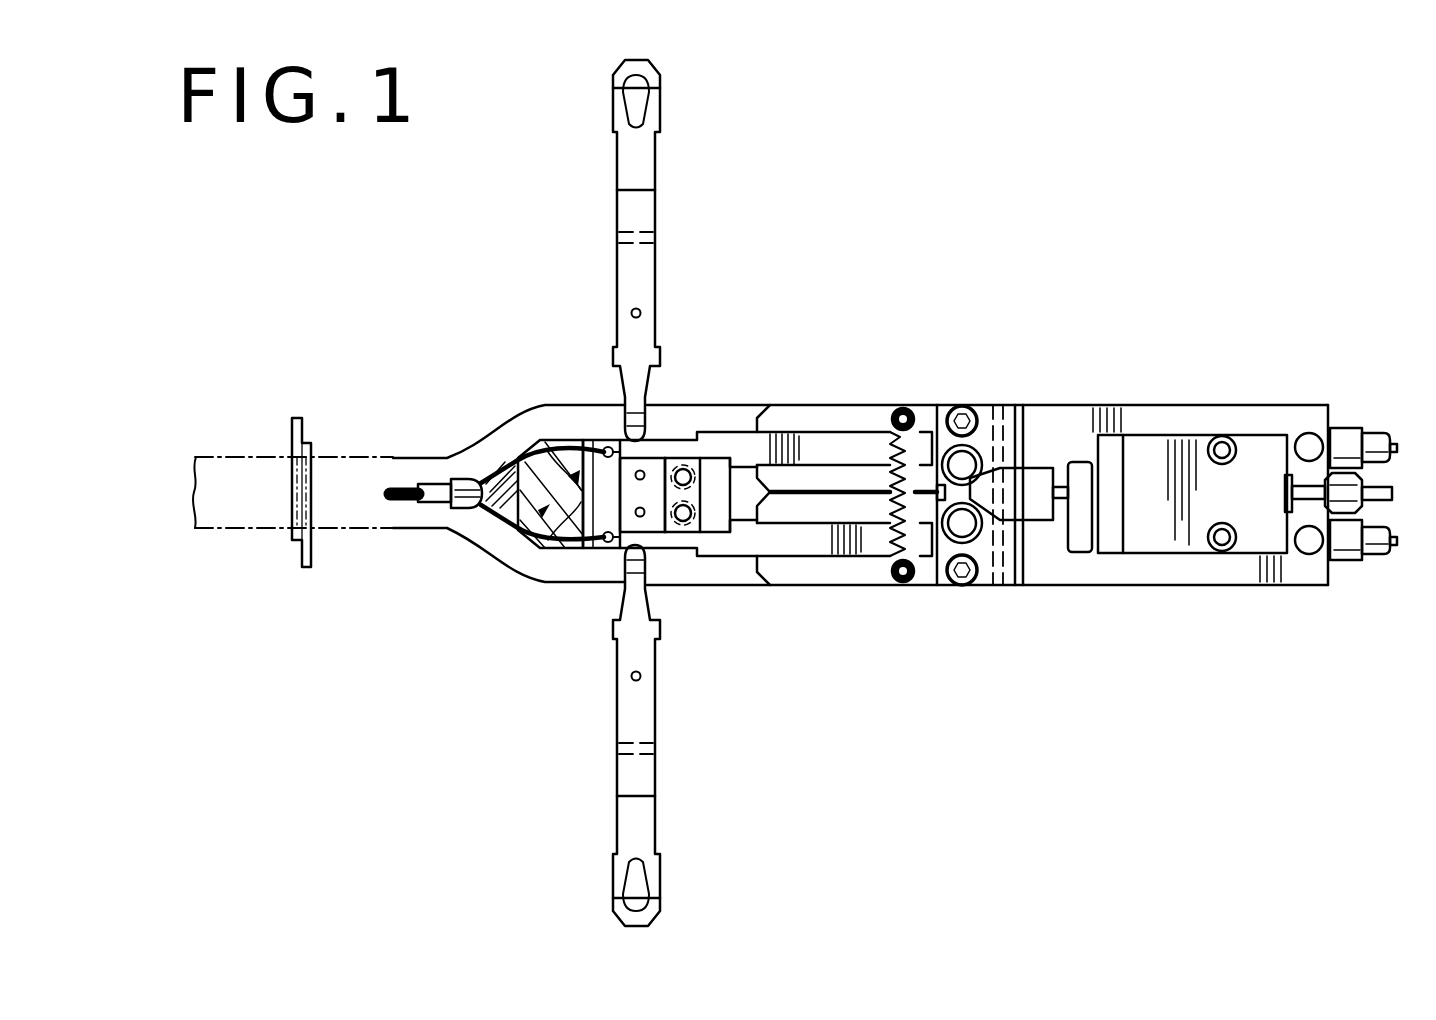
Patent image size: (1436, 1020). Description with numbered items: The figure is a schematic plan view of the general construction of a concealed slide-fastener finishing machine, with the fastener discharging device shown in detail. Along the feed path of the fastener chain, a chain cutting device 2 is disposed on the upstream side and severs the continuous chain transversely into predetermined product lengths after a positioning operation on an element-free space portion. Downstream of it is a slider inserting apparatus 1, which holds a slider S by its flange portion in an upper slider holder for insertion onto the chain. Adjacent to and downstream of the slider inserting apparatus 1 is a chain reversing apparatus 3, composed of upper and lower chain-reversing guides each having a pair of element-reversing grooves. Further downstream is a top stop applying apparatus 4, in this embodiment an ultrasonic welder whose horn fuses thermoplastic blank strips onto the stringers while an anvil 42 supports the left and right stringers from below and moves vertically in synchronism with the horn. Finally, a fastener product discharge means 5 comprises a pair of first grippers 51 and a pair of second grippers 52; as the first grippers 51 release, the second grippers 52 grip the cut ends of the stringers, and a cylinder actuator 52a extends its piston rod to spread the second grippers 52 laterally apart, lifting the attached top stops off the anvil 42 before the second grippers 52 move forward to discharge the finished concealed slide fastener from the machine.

The slider inserting apparatus 1 is at (498, 468).
The chain cutting device 2 is at (308, 566).
The chain reversing apparatus 3 is at (520, 529).
The top stop applying apparatus 4 is at (585, 410).
The fastener product discharge means 5 is at (758, 315).
The anvil 42 is at (645, 516).
The first grippers 51 is at (640, 153).
The second grippers 52 is at (815, 445).
The cylinder actuator 52a is at (1145, 527).
The slider S is at (470, 485).